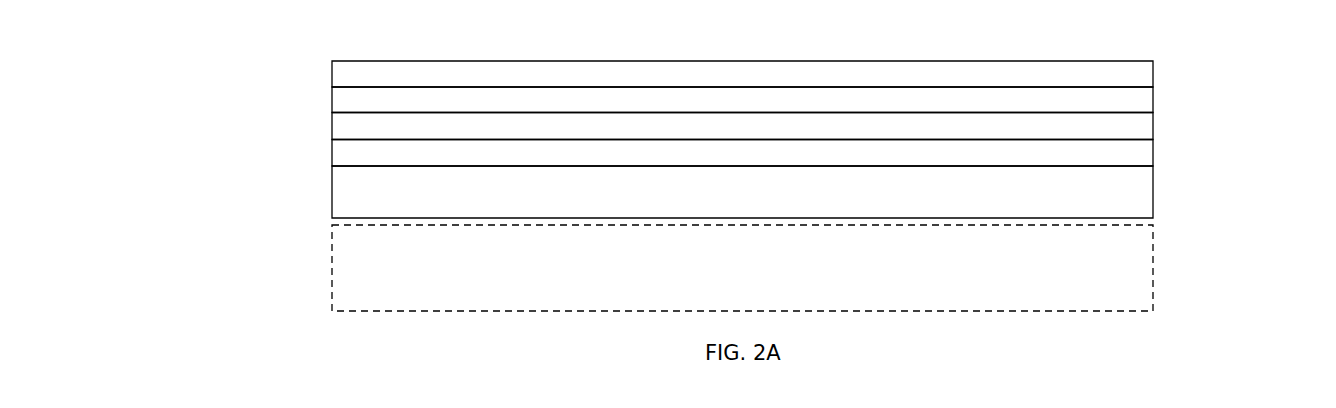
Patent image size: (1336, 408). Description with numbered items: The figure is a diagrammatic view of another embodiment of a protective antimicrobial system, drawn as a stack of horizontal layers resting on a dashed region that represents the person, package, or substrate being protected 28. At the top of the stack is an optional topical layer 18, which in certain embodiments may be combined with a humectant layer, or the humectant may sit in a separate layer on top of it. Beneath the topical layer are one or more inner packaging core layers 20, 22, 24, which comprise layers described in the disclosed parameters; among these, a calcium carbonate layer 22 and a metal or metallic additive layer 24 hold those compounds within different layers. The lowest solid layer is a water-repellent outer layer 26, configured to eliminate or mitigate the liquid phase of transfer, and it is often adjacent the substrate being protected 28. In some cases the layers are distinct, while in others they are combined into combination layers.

The topical layer 18 is at (330, 63).
The inner packaging core layer 20 is at (330, 101).
The calcium carbonate layer 22 is at (1155, 128).
The metal or metallic additive layer 24 is at (1156, 154).
The water-repellent outer layer 26 is at (330, 212).
The substrate being protected 28 is at (1134, 248).